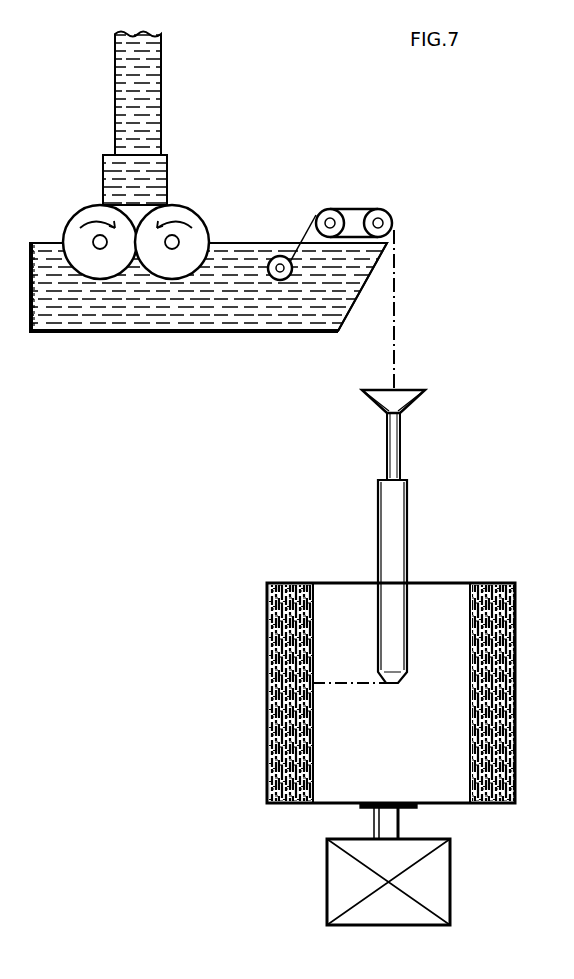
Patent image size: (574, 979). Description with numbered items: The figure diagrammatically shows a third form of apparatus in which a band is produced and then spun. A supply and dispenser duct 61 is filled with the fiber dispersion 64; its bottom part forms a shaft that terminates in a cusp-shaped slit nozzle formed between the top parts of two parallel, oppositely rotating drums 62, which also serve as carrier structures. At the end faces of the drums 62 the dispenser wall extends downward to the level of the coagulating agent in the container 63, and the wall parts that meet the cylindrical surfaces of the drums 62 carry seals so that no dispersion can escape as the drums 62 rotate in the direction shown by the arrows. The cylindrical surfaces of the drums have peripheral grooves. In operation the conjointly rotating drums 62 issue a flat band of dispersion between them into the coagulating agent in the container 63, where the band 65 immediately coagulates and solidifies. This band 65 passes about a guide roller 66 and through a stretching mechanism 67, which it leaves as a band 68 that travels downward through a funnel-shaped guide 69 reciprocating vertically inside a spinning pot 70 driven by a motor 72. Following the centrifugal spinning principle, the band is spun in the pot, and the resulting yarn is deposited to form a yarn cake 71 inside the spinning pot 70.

The supply and dispenser duct 61 is at (147, 92).
The drums 62 is at (83, 223).
The container 63 is at (258, 248).
The dispersion 64 is at (152, 177).
The band 65 is at (212, 282).
The guide roller 66 is at (282, 258).
The stretching mechanism 67 is at (387, 222).
The band 68 is at (395, 328).
The funnel-shaped guide 69 is at (407, 552).
The spinning pot 70 is at (515, 692).
The yarn cake 71 is at (267, 753).
The motor 72 is at (438, 896).